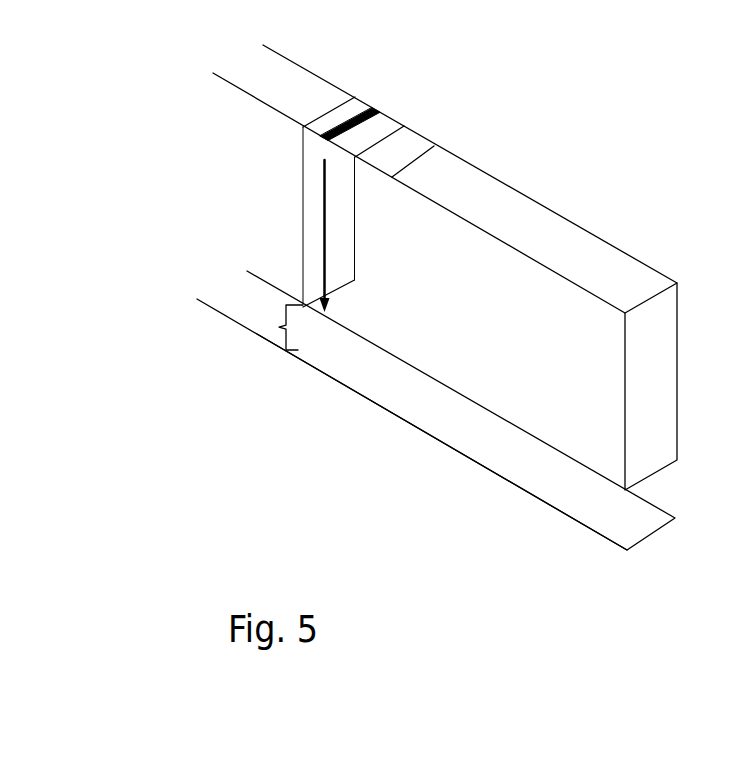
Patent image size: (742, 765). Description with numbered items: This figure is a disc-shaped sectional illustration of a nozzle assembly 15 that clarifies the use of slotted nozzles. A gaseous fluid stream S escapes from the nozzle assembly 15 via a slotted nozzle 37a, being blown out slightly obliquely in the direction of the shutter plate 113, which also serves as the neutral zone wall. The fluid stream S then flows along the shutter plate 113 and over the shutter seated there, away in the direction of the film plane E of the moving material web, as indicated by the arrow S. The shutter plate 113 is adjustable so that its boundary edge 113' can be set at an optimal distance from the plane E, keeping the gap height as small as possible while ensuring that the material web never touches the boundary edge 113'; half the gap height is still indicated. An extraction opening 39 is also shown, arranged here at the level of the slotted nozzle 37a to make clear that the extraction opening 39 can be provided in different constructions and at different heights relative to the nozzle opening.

The nozzle assembly 15 is at (520, 106).
The slotted nozzle 37a is at (357, 111).
The extraction opening 39 is at (408, 148).
The shutter plate 113 is at (378, 215).
The boundary edge 113' is at (382, 298).
The gaseous fluid stream S is at (323, 247).
The plane of the moving material web E is at (468, 438).